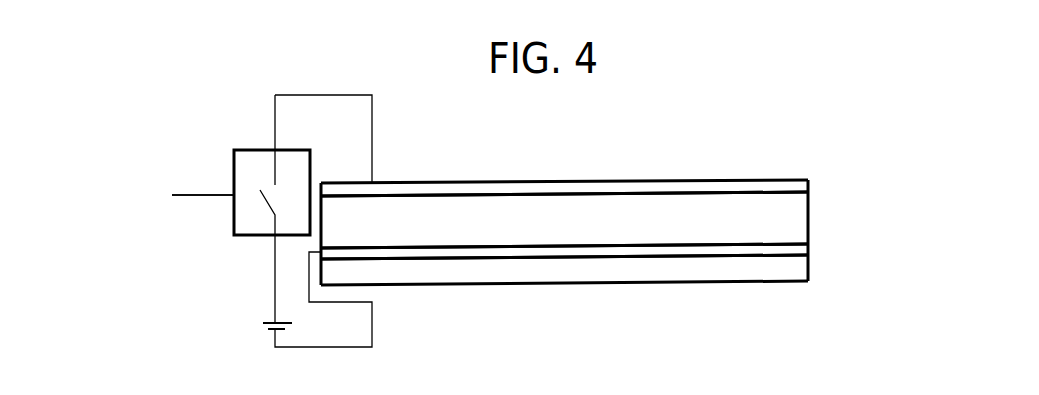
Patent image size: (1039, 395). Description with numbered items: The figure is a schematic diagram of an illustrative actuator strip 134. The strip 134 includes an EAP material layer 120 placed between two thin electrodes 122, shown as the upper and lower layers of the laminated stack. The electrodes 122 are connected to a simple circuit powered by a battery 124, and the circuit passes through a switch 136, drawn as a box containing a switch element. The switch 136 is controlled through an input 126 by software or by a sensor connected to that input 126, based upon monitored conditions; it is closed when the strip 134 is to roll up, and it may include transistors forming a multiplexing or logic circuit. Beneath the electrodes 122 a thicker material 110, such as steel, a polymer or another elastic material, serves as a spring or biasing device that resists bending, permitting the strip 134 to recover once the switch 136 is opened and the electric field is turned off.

The thicker material 110 is at (568, 275).
The EAP material layer 120 is at (800, 220).
The thin electrodes 122 is at (907, 237).
The battery 124 is at (265, 323).
The input 126 is at (198, 197).
The strip 134 is at (690, 150).
The switch 136 is at (233, 163).